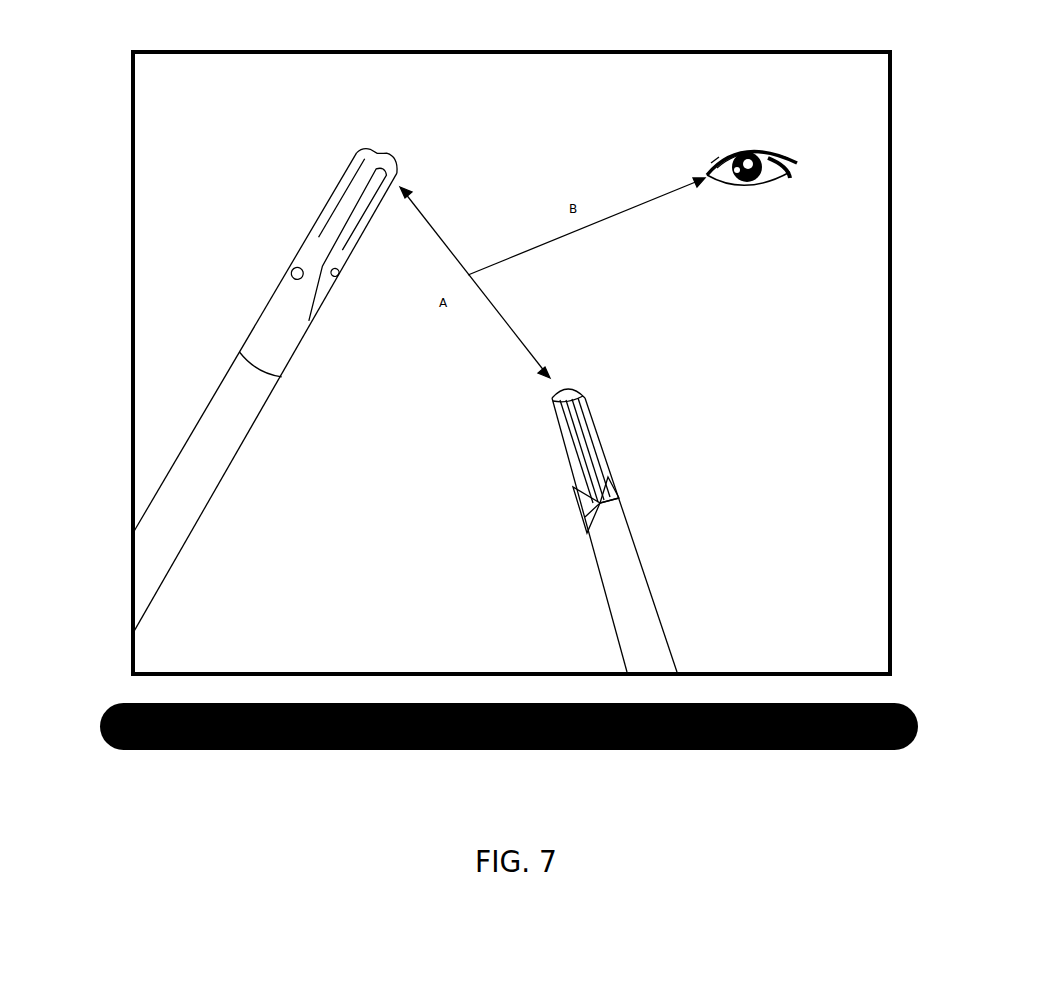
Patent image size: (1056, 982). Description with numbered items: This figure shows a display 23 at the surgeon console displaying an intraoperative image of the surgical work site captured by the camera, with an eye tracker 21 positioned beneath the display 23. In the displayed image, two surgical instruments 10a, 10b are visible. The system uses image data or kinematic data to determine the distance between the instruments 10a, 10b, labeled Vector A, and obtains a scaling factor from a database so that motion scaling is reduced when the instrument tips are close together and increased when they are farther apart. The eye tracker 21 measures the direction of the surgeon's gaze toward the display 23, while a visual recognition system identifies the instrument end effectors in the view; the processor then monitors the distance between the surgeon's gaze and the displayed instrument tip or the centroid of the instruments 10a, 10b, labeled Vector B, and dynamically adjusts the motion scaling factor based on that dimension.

The surgical instrument 10a is at (272, 307).
The surgical instrument 10b is at (630, 550).
The display 23 is at (890, 397).
The eye tracker 21 is at (920, 710).